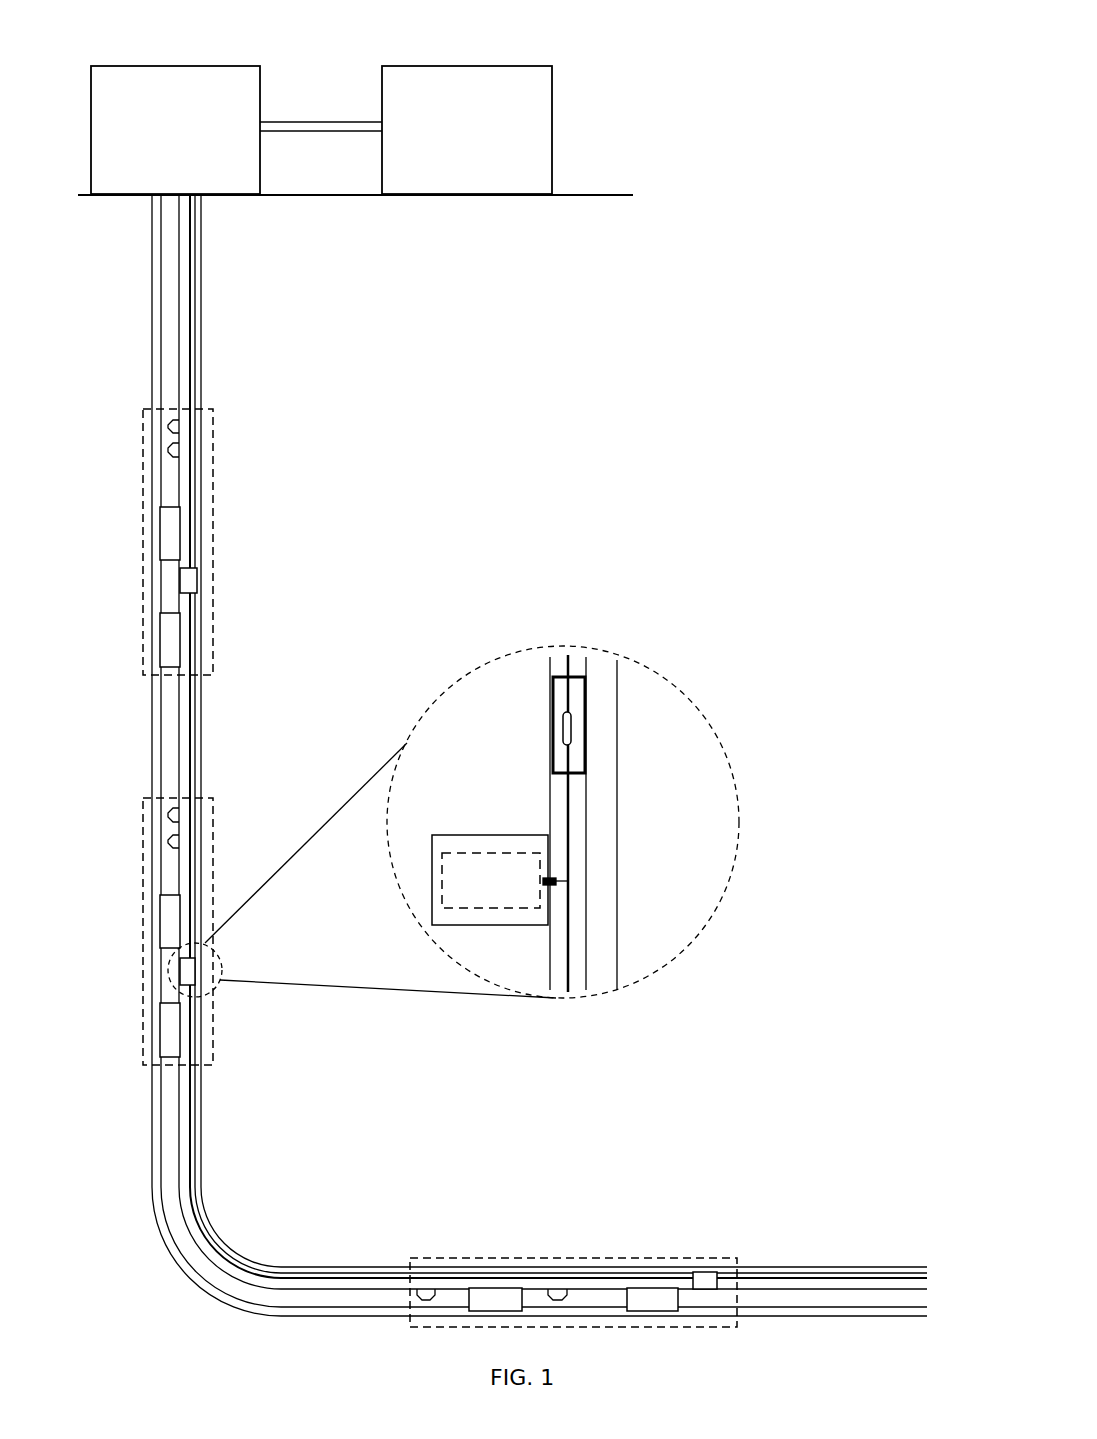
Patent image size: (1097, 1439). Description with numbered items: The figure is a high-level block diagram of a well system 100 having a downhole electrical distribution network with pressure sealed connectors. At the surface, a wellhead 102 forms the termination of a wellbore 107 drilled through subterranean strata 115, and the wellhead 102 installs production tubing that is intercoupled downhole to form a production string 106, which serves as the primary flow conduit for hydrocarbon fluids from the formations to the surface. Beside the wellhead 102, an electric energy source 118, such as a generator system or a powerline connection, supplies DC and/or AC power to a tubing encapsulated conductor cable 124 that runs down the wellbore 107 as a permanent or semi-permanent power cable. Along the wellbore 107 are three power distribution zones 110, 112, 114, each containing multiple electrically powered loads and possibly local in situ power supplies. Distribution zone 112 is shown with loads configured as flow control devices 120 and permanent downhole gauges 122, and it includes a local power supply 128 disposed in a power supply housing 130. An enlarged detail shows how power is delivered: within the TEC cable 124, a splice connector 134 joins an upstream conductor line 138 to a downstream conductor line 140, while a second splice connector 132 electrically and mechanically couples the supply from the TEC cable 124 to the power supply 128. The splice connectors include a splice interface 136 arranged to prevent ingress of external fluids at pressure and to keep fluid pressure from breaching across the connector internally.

The well system 100 is at (684, 74).
The wellhead 102 is at (150, 65).
The production string 106 is at (160, 330).
The wellbore 107 is at (158, 232).
The power distribution zone 110 is at (145, 487).
The power distribution zone 112 is at (312, 946).
The power distribution zone 114 is at (582, 1258).
The subterranean strata 115 is at (521, 478).
The electric energy source 118 is at (502, 65).
The flow control devices 120 is at (157, 923).
The permanent downhole gauges 122 is at (180, 815).
The tubing encapsulated conductor cable 124 is at (197, 225).
The local power supply 128 is at (188, 977).
The power supply housing 130 is at (517, 834).
The splice connector 132 is at (555, 888).
The splice connector 134 is at (587, 707).
The splice interface 136 is at (573, 727).
The upstream conductor line 138 is at (562, 670).
The downstream conductor line 140 is at (573, 784).